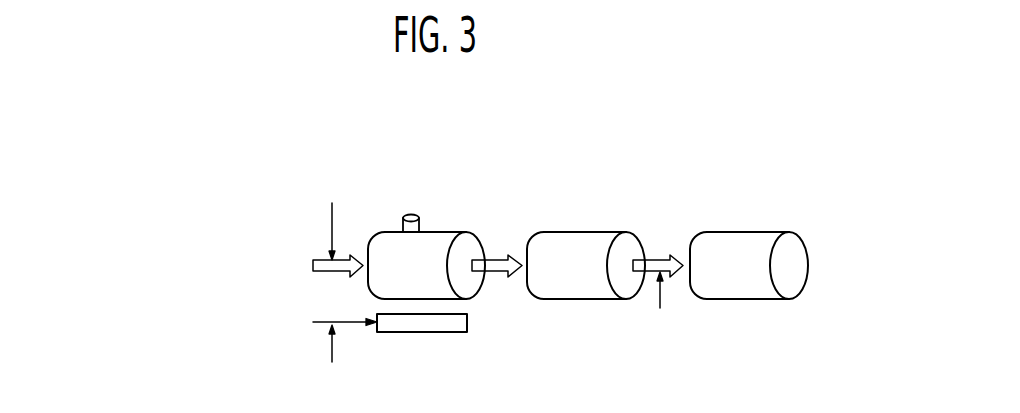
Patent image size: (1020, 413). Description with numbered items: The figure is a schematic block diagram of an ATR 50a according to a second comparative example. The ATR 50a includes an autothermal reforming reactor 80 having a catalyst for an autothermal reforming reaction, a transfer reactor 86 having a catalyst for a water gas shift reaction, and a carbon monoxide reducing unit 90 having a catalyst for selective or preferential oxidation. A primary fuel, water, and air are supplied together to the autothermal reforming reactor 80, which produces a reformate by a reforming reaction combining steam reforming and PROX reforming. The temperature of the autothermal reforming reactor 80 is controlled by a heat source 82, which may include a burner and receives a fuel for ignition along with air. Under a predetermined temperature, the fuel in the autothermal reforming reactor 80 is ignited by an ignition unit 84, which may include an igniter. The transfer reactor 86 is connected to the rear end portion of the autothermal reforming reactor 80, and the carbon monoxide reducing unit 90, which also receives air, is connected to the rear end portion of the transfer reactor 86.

The ATR 50a is at (381, 159).
The autothermal reforming reactor 80 is at (445, 239).
The heat source 82 is at (438, 333).
The ignition unit 84 is at (402, 225).
The transfer reactor 86 is at (582, 242).
The carbon monoxide reducing unit 90 is at (728, 242).